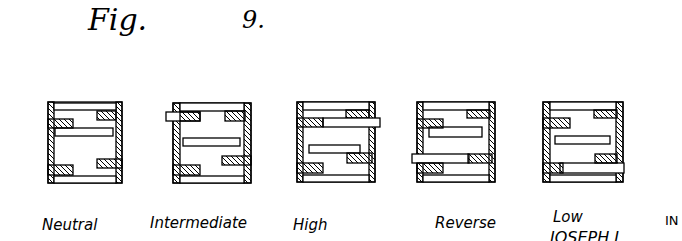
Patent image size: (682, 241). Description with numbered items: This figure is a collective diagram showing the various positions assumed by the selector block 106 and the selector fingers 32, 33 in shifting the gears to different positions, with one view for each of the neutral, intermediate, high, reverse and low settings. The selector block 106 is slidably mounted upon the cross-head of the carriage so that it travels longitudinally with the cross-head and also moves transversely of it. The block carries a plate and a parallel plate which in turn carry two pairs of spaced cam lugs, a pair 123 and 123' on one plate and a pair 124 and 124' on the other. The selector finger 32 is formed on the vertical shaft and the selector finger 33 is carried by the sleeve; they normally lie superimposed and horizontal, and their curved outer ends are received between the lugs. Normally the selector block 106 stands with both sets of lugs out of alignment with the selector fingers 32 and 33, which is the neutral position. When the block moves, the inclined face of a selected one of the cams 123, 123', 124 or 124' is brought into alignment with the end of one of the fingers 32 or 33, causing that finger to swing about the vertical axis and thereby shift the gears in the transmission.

The selector block 106 is at (70, 98).
The selector finger 33 is at (168, 112).
The selector finger 32 is at (62, 132).
The cam lug 123 is at (290, 117).
The cam lug 123' is at (284, 187).
The cam lug 124 is at (421, 144).
The cam lug 124' is at (355, 183).